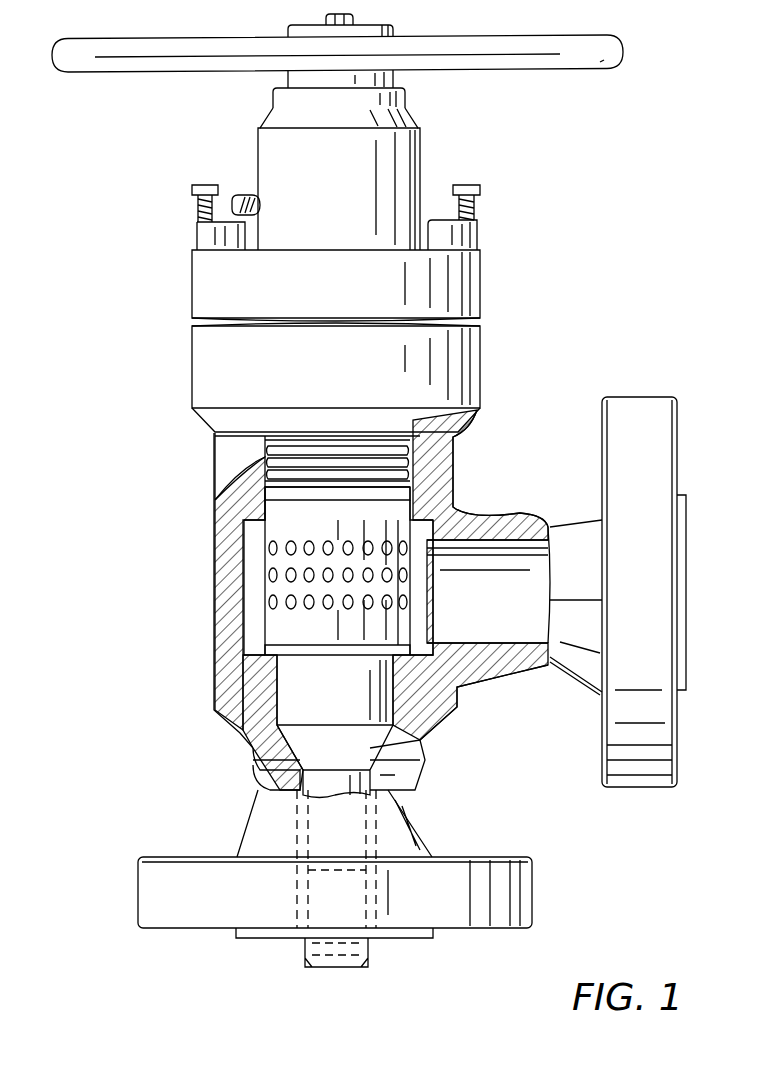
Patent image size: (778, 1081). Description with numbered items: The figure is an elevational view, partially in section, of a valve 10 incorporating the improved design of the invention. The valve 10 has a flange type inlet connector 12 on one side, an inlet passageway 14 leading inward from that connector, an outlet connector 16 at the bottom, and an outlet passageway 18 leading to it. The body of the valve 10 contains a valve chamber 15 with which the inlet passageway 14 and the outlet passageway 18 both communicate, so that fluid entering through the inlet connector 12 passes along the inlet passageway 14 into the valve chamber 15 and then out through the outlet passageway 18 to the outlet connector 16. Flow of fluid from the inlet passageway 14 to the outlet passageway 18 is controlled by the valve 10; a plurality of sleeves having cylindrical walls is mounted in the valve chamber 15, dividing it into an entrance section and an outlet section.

The valve 10 is at (137, 340).
The flange type inlet connector 12 is at (633, 420).
The inlet passageway 14 is at (485, 568).
The valve chamber 15 is at (265, 562).
The outlet connector 16 is at (165, 877).
The outlet passageway 18 is at (300, 797).